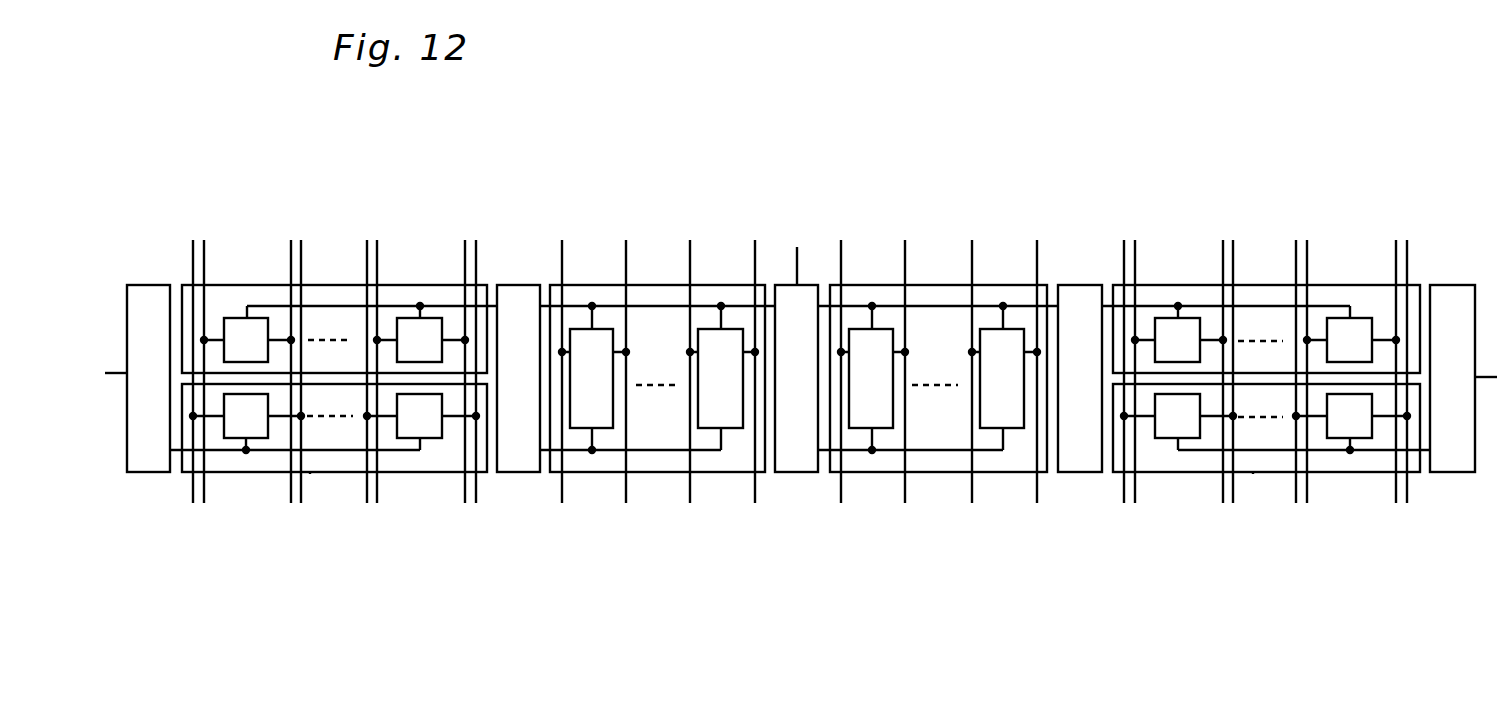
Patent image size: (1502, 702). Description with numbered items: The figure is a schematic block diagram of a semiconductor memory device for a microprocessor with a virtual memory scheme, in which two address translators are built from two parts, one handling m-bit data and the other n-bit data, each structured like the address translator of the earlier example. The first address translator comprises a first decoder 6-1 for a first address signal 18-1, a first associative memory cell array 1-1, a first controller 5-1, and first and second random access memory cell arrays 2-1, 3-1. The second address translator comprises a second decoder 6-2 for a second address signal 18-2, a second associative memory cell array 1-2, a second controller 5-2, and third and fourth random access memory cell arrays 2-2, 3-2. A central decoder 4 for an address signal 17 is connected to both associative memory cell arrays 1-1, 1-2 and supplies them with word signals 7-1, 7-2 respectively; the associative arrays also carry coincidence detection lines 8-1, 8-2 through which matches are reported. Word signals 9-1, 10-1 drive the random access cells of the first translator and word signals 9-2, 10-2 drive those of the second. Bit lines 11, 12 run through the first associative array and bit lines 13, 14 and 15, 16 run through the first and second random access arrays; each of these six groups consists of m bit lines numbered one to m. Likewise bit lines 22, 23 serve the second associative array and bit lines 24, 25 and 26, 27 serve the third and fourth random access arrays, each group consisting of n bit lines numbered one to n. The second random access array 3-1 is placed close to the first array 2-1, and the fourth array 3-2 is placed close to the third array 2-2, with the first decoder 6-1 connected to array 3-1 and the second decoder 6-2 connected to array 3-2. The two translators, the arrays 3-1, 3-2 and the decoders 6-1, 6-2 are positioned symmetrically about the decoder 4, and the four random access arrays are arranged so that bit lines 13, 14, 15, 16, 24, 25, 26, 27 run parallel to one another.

The first associative memory cell array 1-1 is at (650, 275).
The second associative memory cell array 1-2 is at (925, 275).
The first random access memory cell array 2-1 is at (318, 275).
The third random access memory cell array 2-2 is at (1255, 276).
The second random access memory cell array 3-1 is at (310, 474).
The fourth random access memory cell array 3-2 is at (1253, 474).
The decoder 4 is at (788, 473).
The first controller 5-1 is at (510, 473).
The second controller 5-2 is at (1070, 473).
The first decoder 6-1 is at (136, 286).
The second decoder 6-2 is at (1450, 278).
The word signal 7-1 is at (636, 306).
The word signal 7-2 is at (913, 306).
The coincidence detection line 8-1 is at (632, 450).
The coincidence detection line 8-2 is at (910, 434).
The word signal 9-1 is at (310, 306).
The word signal 9-2 is at (1244, 306).
The word signal 10-1 is at (306, 450).
The word signal 10-2 is at (1246, 444).
The bit lines 11 is at (703, 214).
The bit lines 12 is at (755, 242).
The bit lines 13 is at (397, 214).
The bit lines 14 is at (291, 242).
The bit lines 15 is at (192, 503).
The bit lines 16 is at (301, 503).
The address signal 17 is at (797, 260).
The first address signal 18-1 is at (115, 373).
The second address signal 18-2 is at (1485, 377).
The bit lines 22 is at (982, 214).
The bit lines 23 is at (905, 242).
The bit lines 24 is at (1135, 242).
The bit lines 25 is at (1223, 242).
The bit lines 26 is at (1124, 503).
The bit lines 27 is at (1407, 503).